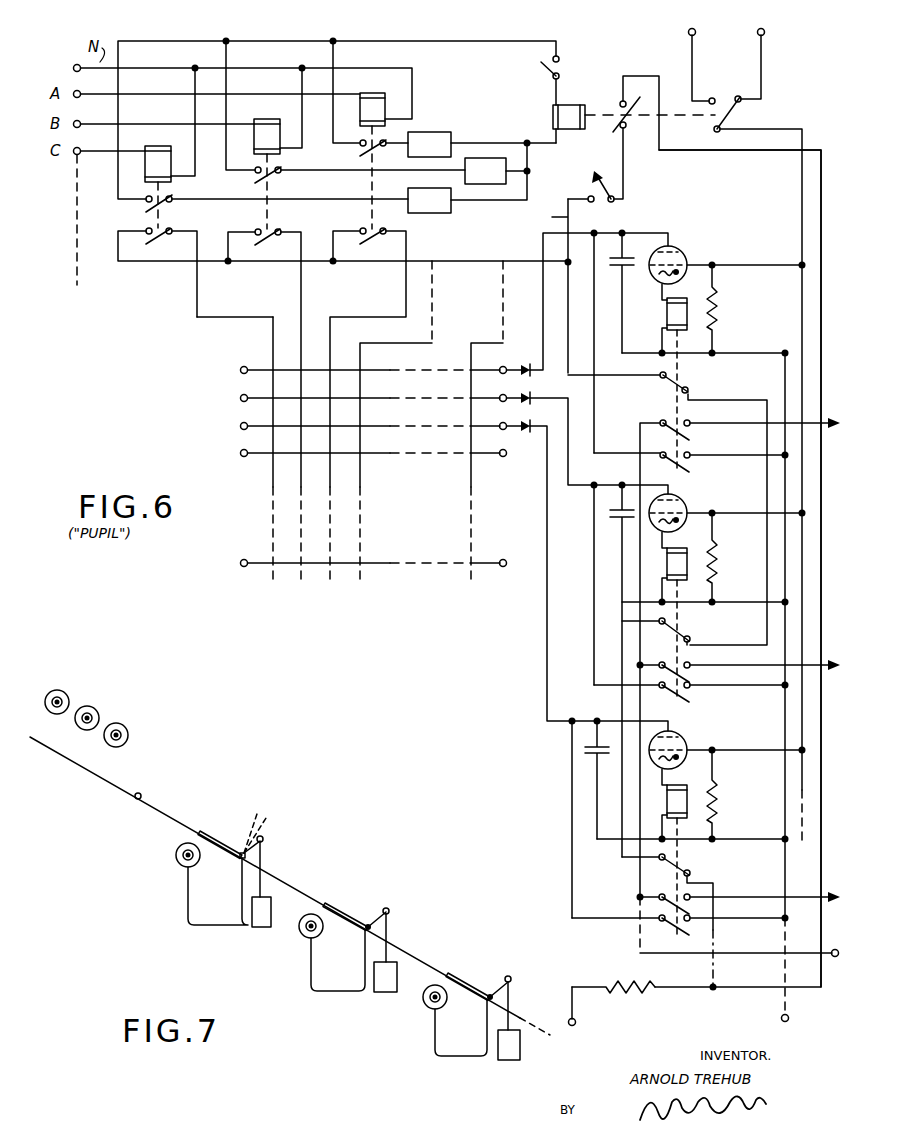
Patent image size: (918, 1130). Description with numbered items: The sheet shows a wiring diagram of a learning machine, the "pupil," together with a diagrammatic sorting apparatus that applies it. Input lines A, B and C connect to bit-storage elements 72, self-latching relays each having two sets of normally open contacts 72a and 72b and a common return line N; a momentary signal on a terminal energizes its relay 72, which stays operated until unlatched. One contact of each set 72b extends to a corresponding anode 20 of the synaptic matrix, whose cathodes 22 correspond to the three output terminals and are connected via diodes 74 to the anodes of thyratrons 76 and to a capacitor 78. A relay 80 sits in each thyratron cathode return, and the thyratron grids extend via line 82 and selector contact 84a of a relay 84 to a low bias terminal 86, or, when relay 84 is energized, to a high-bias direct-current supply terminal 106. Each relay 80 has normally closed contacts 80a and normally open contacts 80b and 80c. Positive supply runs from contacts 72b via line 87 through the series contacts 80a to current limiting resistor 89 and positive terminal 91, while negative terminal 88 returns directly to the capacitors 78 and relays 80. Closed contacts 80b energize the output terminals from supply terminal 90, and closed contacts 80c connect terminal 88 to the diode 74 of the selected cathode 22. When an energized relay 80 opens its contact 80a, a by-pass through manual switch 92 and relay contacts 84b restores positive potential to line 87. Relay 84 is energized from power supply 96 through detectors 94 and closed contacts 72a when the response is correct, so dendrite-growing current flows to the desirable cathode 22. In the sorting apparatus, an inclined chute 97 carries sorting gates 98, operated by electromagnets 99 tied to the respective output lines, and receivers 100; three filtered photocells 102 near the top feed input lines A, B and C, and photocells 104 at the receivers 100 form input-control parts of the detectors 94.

In FIG. 6, the anode 20 is at (280, 358).
In FIG. 6, the cathode 22 is at (361, 398).
In FIG. 6, the bit-storage element 72 is at (145, 165).
In FIG. 6, the normally open contacts 72a is at (146, 203).
In FIG. 6, the normally open contacts 72b is at (149, 241).
In FIG. 6, the diode 74 is at (533, 350).
In FIG. 6, the thyratron 76 is at (680, 250).
In FIG. 6, the capacitor 78 is at (605, 265).
In FIG. 6, the relay 80 is at (667, 318).
In FIG. 6, the normally closed contacts 80a is at (689, 386).
In FIG. 6, the normally open contacts 80b is at (658, 422).
In FIG. 6, the normally open contacts 80c is at (689, 469).
In FIG. 6, the line 82 is at (802, 176).
In FIG. 6, the relay 84 is at (570, 104).
In FIG. 6, the selector contact 84a is at (742, 110).
In FIG. 6, the relay contacts 84b is at (702, 531).
In FIG. 6, the terminal 86 is at (765, 33).
In FIG. 6, the line 87 is at (520, 262).
In FIG. 6, the negative terminal 88 is at (774, 973).
In FIG. 6, the current limiting resistor 89 is at (622, 972).
In FIG. 6, the terminal 90 is at (852, 942).
In FIG. 6, the positive terminal 91 is at (569, 1020).
In FIG. 6, the manual switch 92 is at (599, 182).
In FIG. 6, the detector 94 is at (450, 118).
In FIG. 6, the power supply 96 is at (545, 62).
In FIG. 6, the direct-current supply terminal 106 is at (689, 34).
In FIG. 7, the inclined chute 97 is at (135, 797).
In FIG. 7, the sorting gate 98 is at (356, 893).
In FIG. 7, the electromagnet 99 is at (258, 928).
In FIG. 7, the receiver 100 is at (204, 925).
In FIG. 7, the photocell 102 is at (104, 701).
In FIG. 7, the photocell 104 is at (273, 945).